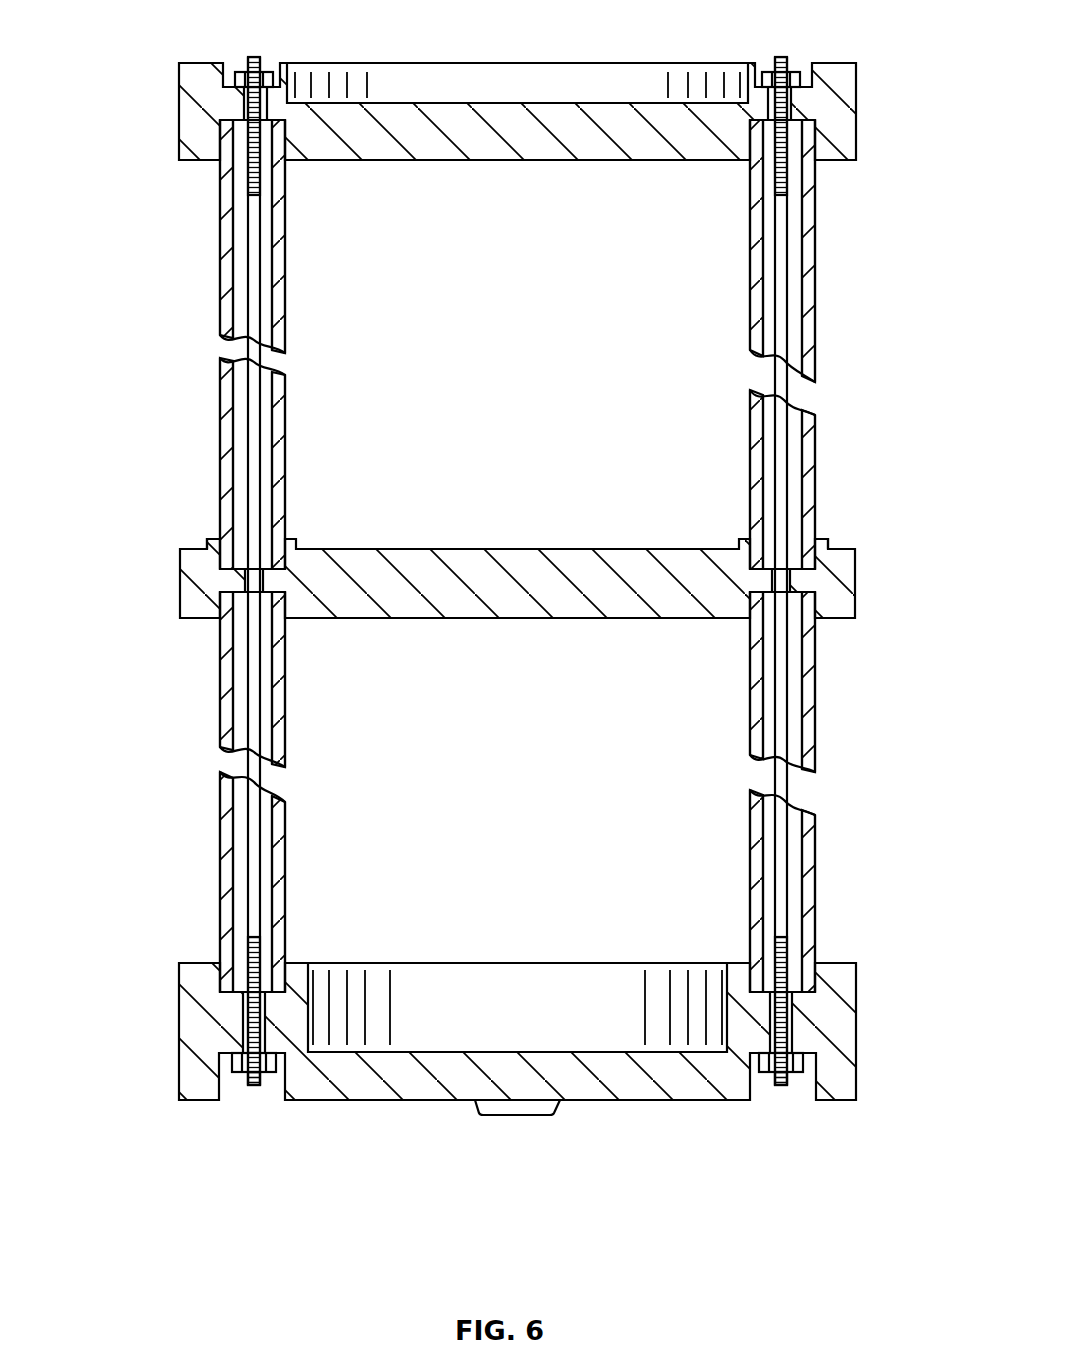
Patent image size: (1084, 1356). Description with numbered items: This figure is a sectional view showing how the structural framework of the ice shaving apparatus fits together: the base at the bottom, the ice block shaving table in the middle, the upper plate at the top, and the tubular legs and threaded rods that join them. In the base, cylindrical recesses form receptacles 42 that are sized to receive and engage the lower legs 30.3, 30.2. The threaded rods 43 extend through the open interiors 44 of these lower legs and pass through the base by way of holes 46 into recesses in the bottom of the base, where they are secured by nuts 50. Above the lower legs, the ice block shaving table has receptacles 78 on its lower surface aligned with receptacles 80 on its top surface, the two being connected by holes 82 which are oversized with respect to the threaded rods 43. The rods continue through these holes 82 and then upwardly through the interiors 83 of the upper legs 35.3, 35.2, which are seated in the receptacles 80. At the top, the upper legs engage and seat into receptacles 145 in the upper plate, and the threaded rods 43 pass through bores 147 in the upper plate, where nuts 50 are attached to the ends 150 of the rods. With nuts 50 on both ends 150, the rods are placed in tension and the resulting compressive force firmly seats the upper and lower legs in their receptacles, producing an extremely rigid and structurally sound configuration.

The receptacles 145 is at (216, 130).
The bores 147 is at (230, 98).
The nuts 50 is at (241, 70).
The ends 150 is at (264, 60).
The threaded rods 43 is at (254, 206).
The holes 46 is at (250, 1012).
The interiors 83 is at (241, 262).
The upper leg 35.3 is at (223, 386).
The upper leg 35.2 is at (815, 340).
The open interiors 44 is at (240, 832).
The lower leg 30.3 is at (226, 845).
The lower leg 30.2 is at (818, 876).
The receptacles 78 is at (203, 594).
The holes 82 is at (242, 582).
The receptacles 80 is at (214, 548).
The receptacles 42 is at (224, 975).